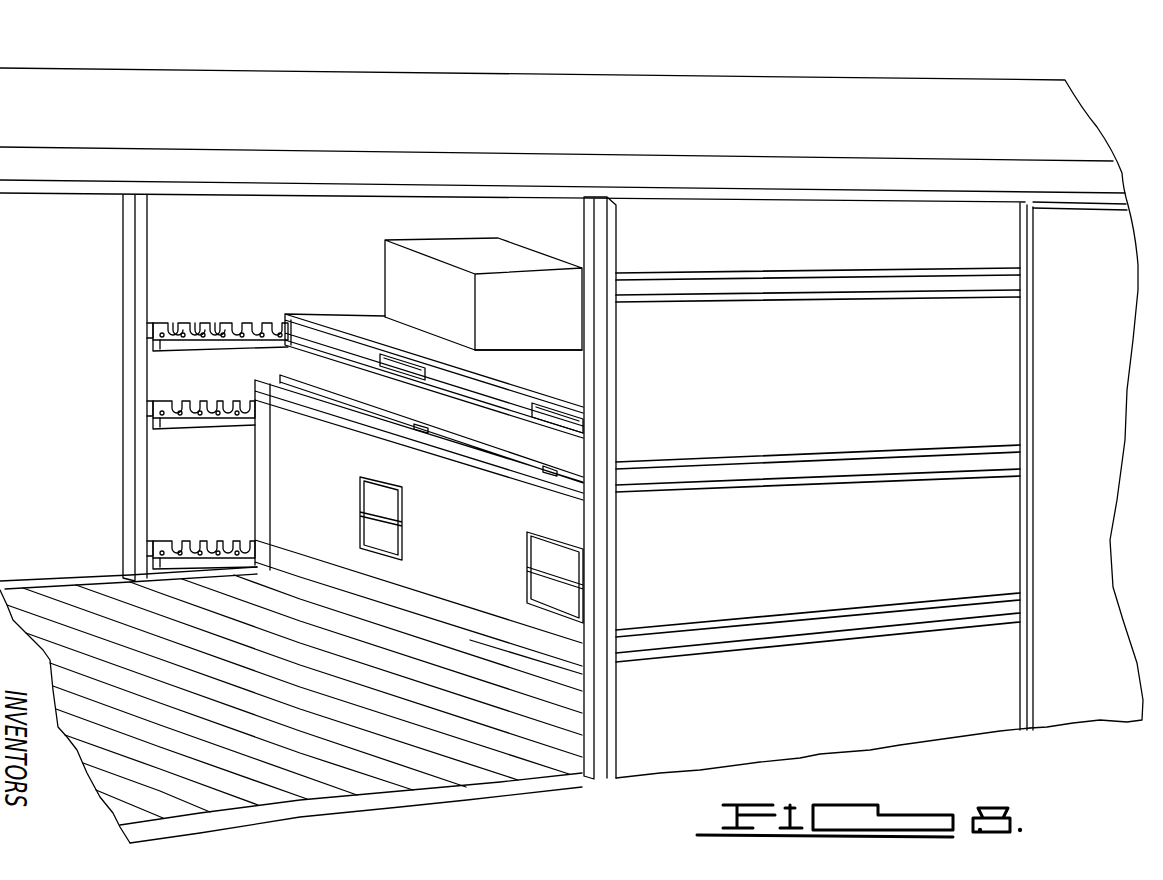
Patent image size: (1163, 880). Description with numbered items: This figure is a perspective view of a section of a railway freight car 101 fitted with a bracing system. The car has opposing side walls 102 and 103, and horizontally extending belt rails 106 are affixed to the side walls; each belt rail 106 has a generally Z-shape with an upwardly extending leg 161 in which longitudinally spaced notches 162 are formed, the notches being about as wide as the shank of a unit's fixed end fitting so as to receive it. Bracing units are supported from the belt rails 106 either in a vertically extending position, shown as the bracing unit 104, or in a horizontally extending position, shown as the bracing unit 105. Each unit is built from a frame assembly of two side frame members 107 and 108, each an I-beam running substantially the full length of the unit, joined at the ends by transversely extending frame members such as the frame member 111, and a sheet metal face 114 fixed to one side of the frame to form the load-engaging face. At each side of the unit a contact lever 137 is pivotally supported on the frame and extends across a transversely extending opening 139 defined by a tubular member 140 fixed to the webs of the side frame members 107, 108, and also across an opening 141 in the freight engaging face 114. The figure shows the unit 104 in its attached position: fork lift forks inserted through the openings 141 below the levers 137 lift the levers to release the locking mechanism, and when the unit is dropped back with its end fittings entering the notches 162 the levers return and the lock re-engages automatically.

The railway freight car 101 is at (366, 77).
The side wall 102 is at (160, 240).
The side wall 103 is at (1110, 312).
The bracing unit 104 is at (310, 569).
The bracing unit 105 is at (338, 322).
The belt rail 106 is at (150, 342).
The side frame member 107 is at (513, 347).
The side frame member 108 is at (477, 637).
The transversely extending frame member 111 is at (263, 455).
The sheet metal face 114 is at (552, 352).
The contact lever 137 is at (380, 508).
The transversely extending opening 139 is at (437, 415).
The tubular member 140 is at (380, 420).
The opening 141 is at (370, 490).
The upwardly extending leg 161 is at (150, 327).
The notch 162 is at (230, 322).